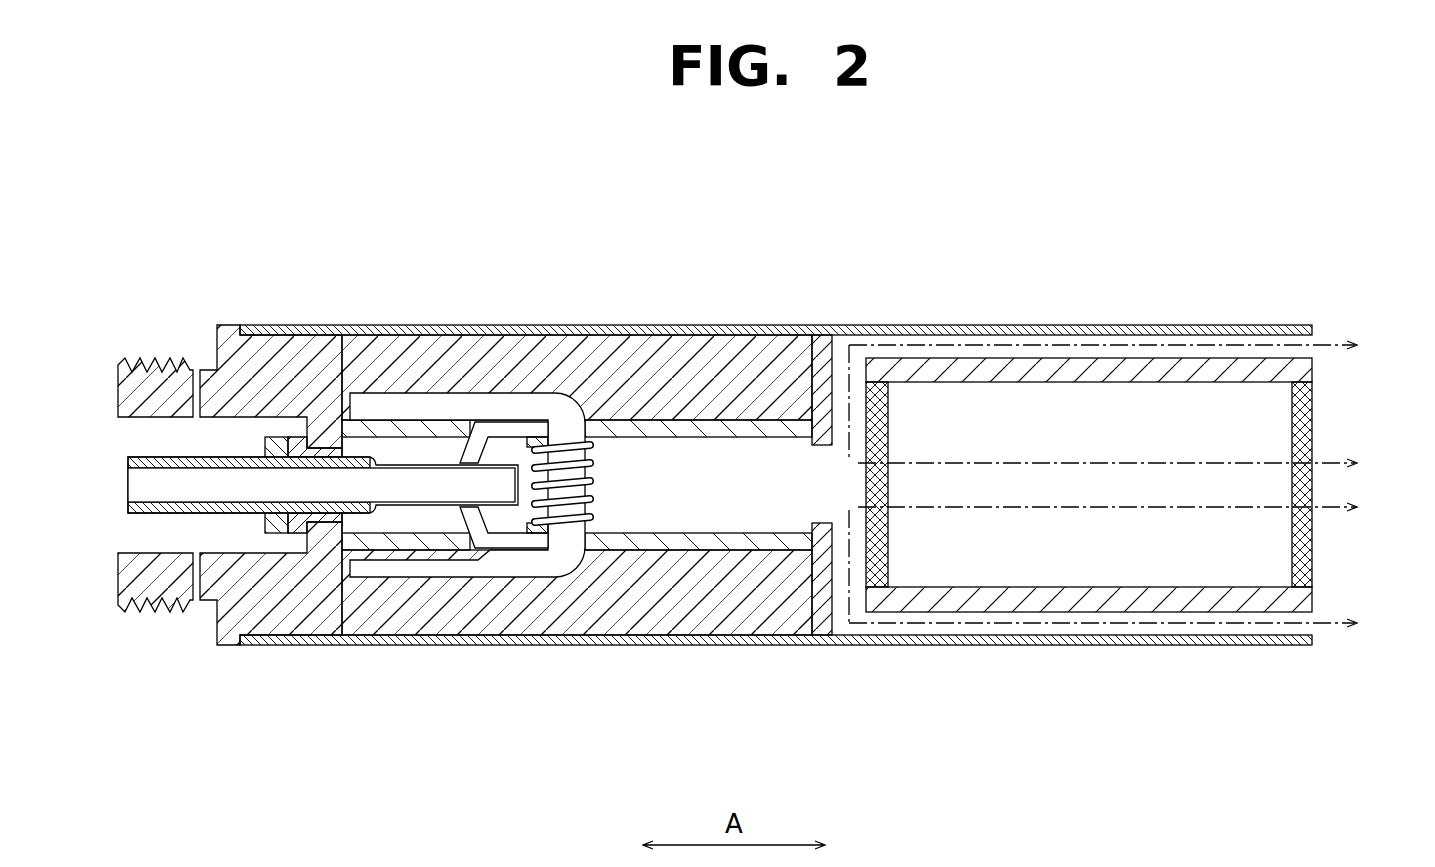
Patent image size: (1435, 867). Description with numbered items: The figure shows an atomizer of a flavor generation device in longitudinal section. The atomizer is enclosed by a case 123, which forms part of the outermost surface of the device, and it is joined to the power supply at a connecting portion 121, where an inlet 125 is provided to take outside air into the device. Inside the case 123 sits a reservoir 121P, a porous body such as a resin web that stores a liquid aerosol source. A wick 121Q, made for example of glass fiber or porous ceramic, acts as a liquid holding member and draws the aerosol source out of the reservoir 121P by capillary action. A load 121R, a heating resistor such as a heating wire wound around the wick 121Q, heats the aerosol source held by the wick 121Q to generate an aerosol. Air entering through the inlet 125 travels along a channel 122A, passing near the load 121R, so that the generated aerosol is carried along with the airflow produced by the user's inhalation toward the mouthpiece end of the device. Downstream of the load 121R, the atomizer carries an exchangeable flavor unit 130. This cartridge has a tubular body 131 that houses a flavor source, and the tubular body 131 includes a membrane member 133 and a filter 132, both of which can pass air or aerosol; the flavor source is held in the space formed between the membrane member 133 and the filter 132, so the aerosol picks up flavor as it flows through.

The connecting portion 121 is at (147, 612).
The inlet 125 is at (196, 370).
The channel 122A is at (233, 477).
The reservoir 121P is at (648, 612).
The wick 121Q is at (523, 563).
The load 121R is at (590, 465).
The case 123 is at (1013, 330).
The flavor unit 130 is at (1320, 442).
The tubular body 131 is at (1235, 612).
The filter 132 is at (1315, 540).
The membrane member 133 is at (888, 545).